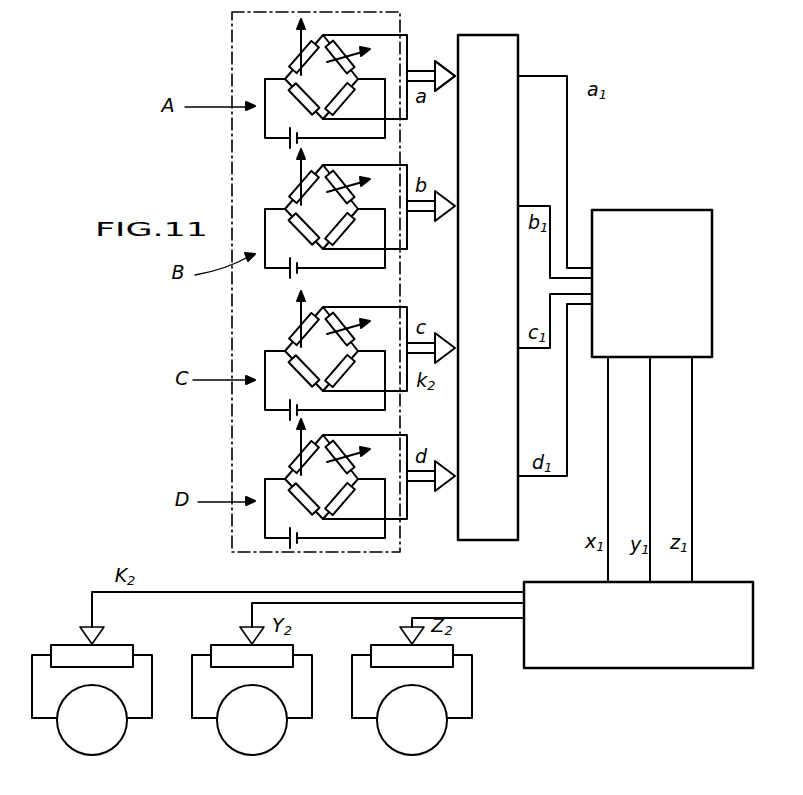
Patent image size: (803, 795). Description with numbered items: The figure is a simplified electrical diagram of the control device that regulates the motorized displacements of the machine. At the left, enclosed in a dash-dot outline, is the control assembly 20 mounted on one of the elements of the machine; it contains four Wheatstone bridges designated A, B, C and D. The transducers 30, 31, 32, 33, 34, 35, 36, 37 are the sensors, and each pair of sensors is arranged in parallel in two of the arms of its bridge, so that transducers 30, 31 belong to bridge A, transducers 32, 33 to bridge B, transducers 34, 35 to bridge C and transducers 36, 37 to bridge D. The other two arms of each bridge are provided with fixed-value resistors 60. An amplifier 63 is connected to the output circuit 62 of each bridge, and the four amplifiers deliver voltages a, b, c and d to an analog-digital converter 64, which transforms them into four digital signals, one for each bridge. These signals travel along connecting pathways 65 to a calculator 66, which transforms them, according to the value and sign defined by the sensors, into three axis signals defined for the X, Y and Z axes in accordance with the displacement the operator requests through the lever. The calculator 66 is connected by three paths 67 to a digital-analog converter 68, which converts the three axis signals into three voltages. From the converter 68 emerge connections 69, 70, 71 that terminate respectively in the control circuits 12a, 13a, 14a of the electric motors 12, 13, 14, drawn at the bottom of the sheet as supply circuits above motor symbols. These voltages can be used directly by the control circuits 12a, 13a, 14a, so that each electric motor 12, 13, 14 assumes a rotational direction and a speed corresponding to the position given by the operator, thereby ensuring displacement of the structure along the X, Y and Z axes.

The control assembly 20 is at (226, 32).
The transducer 30 is at (288, 24).
The transducer 31 is at (362, 57).
The transducer 32 is at (280, 186).
The transducer 33 is at (360, 187).
The transducer 34 is at (282, 327).
The transducer 35 is at (360, 329).
The transducer 36 is at (284, 453).
The transducer 37 is at (360, 457).
The fixed-value resistor 60 is at (301, 66).
The output circuit 62 is at (425, 34).
The amplifier 63 is at (433, 50).
The analog-digital converter 64 is at (502, 58).
The connecting pathway 65 is at (547, 205).
The calculator 66 is at (686, 226).
The path 67 is at (608, 472).
The digital-analog converter 68 is at (632, 647).
The connection 69 is at (187, 590).
The connection 70 is at (325, 602).
The connection 71 is at (460, 617).
The electric motor 12 is at (103, 737).
The control circuit 12a is at (72, 653).
The electric motor 13 is at (263, 737).
The control circuit 13a is at (233, 653).
The electric motor 14 is at (423, 737).
The control circuit 14a is at (391, 655).